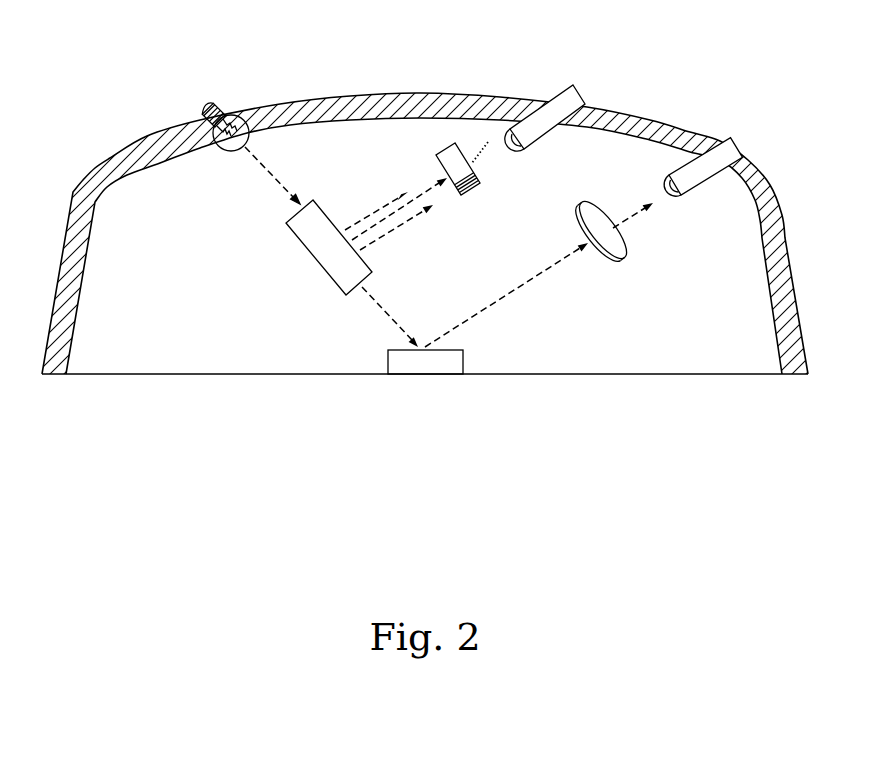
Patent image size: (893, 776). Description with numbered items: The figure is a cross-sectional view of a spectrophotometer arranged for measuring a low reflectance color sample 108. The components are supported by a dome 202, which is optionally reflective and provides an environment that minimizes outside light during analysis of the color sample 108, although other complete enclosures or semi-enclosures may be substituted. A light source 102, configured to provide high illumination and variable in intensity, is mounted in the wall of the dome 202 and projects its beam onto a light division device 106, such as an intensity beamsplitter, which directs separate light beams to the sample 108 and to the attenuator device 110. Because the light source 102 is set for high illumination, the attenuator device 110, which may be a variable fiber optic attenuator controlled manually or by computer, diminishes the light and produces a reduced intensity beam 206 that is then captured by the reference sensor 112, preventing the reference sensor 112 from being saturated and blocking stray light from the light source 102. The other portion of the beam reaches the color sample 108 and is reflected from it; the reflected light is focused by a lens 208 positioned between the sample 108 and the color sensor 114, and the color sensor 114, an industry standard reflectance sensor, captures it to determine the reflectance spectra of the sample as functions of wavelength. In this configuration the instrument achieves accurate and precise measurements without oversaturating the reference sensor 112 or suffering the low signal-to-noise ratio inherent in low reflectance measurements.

The light source 102 is at (205, 98).
The light division device 106 is at (319, 268).
The color sample 108 is at (463, 365).
The attenuator device 110 is at (450, 150).
The reference sensor 112 is at (560, 85).
The color sensor 114 is at (727, 138).
The dome 202 is at (120, 152).
The reduced intensity beam 206 is at (488, 142).
The lens 208 is at (627, 245).